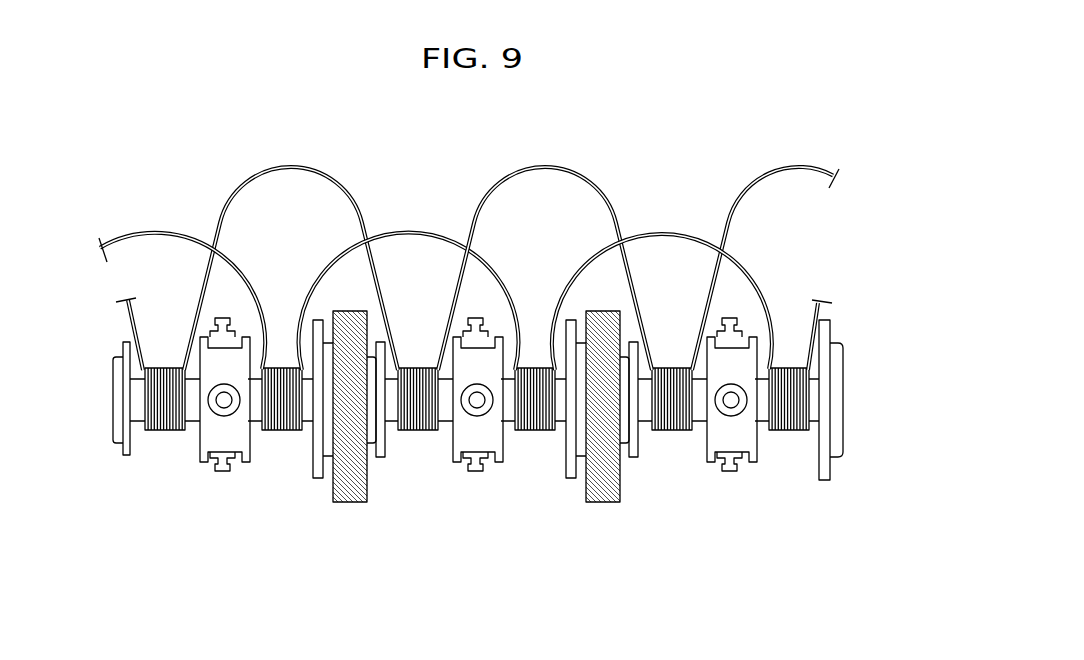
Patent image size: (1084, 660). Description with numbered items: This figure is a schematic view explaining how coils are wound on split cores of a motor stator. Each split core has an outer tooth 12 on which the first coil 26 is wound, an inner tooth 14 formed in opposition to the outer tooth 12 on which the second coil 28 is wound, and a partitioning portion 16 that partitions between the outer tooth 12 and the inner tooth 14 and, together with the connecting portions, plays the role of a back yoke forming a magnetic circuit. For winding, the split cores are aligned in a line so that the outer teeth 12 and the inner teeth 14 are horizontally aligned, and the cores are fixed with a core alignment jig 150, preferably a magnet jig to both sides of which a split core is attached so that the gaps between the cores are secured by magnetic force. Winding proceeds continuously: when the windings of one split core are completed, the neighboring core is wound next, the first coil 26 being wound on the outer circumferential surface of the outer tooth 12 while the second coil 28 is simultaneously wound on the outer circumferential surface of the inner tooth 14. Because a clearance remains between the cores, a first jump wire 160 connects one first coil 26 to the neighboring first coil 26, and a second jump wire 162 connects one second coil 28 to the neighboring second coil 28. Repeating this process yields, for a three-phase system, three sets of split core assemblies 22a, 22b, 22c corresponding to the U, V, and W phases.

The outer tooth 12 is at (193, 417).
The inner tooth 14 is at (307, 417).
The partitioning portion 16 is at (247, 441).
The split core assembly 22a is at (238, 304).
The split core assembly 22b is at (492, 304).
The split core assembly 22c is at (744, 304).
The first coil 26 is at (162, 432).
The second coil 28 is at (275, 432).
The core alignment jig 150 is at (351, 503).
The first jump wire 160 is at (290, 165).
The second jump wire 162 is at (409, 230).